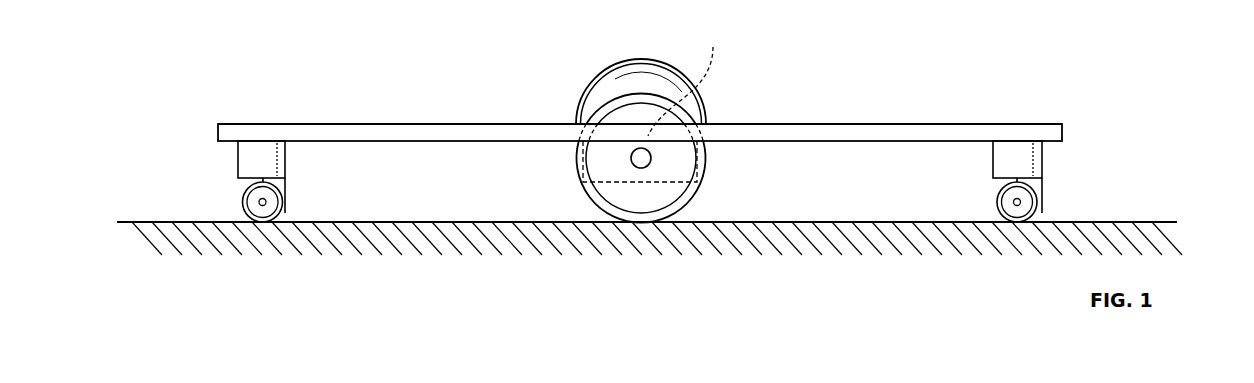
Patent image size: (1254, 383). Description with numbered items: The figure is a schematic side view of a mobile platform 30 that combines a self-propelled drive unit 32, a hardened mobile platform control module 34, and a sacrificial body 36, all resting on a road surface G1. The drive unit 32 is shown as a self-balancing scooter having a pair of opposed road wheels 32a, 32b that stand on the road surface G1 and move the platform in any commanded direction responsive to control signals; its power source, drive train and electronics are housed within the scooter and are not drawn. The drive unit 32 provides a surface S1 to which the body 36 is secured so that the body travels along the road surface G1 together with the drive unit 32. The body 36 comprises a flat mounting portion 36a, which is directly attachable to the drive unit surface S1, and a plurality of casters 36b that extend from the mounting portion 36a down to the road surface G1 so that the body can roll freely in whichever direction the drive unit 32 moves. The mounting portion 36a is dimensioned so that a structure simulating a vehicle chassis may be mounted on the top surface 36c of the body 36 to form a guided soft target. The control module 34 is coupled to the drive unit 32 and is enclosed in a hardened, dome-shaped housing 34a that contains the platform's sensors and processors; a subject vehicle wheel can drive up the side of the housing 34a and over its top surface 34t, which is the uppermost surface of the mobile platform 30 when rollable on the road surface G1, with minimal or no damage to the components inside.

The mobile platform 30 is at (207, 83).
The self-propelled drive unit 32 is at (651, 182).
The road wheel 32a is at (598, 102).
The road wheel 32b is at (647, 198).
The hardened mobile platform control module 34 is at (623, 65).
The top surface of the control module housing 34t is at (640, 61).
The hardened housing 34a is at (658, 80).
The sacrificial body 36 is at (368, 122).
The mounting portion 36a is at (457, 127).
The casters 36b is at (258, 203).
The top surface of the body 36c is at (778, 125).
The drive unit surface S1 is at (688, 80).
The road surface G1 is at (1125, 222).